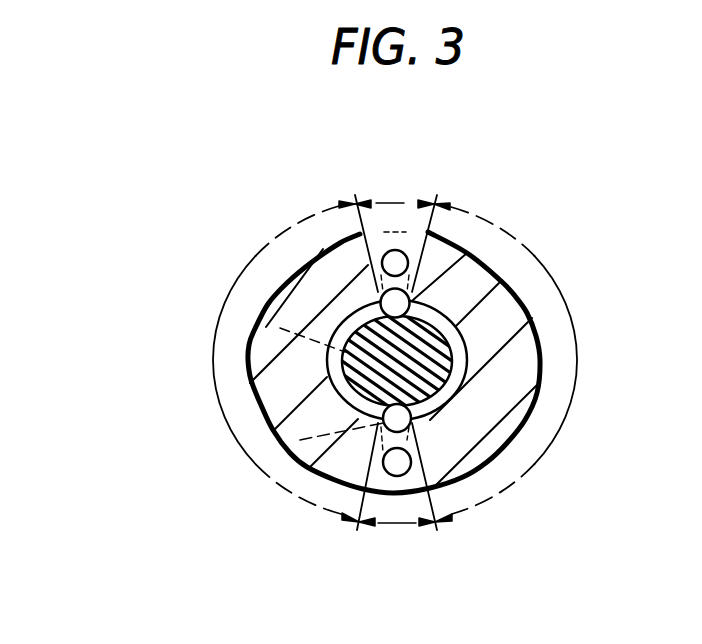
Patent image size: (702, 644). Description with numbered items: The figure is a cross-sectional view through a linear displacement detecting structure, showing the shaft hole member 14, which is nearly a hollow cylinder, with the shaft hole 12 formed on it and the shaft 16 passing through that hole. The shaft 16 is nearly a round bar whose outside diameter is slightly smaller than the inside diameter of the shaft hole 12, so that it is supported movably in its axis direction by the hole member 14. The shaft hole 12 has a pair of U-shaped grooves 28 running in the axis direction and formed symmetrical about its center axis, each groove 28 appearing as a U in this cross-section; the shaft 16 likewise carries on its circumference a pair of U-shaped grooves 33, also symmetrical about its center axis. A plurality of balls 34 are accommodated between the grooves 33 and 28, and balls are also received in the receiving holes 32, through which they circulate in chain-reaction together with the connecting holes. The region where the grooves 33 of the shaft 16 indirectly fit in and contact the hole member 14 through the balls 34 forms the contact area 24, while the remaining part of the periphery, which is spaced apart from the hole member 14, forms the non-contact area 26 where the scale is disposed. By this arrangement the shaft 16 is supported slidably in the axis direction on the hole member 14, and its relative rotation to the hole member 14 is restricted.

The shaft hole 12 is at (466, 357).
The shaft hole member 14 is at (523, 420).
The shaft 16 is at (253, 328).
The contact area 24 is at (392, 203).
The non-contact area 26 is at (213, 368).
The U-shaped groove 28 is at (382, 298).
The receiving hole 32 is at (357, 234).
The U-shaped groove 33 is at (300, 440).
The ball 34 is at (405, 302).